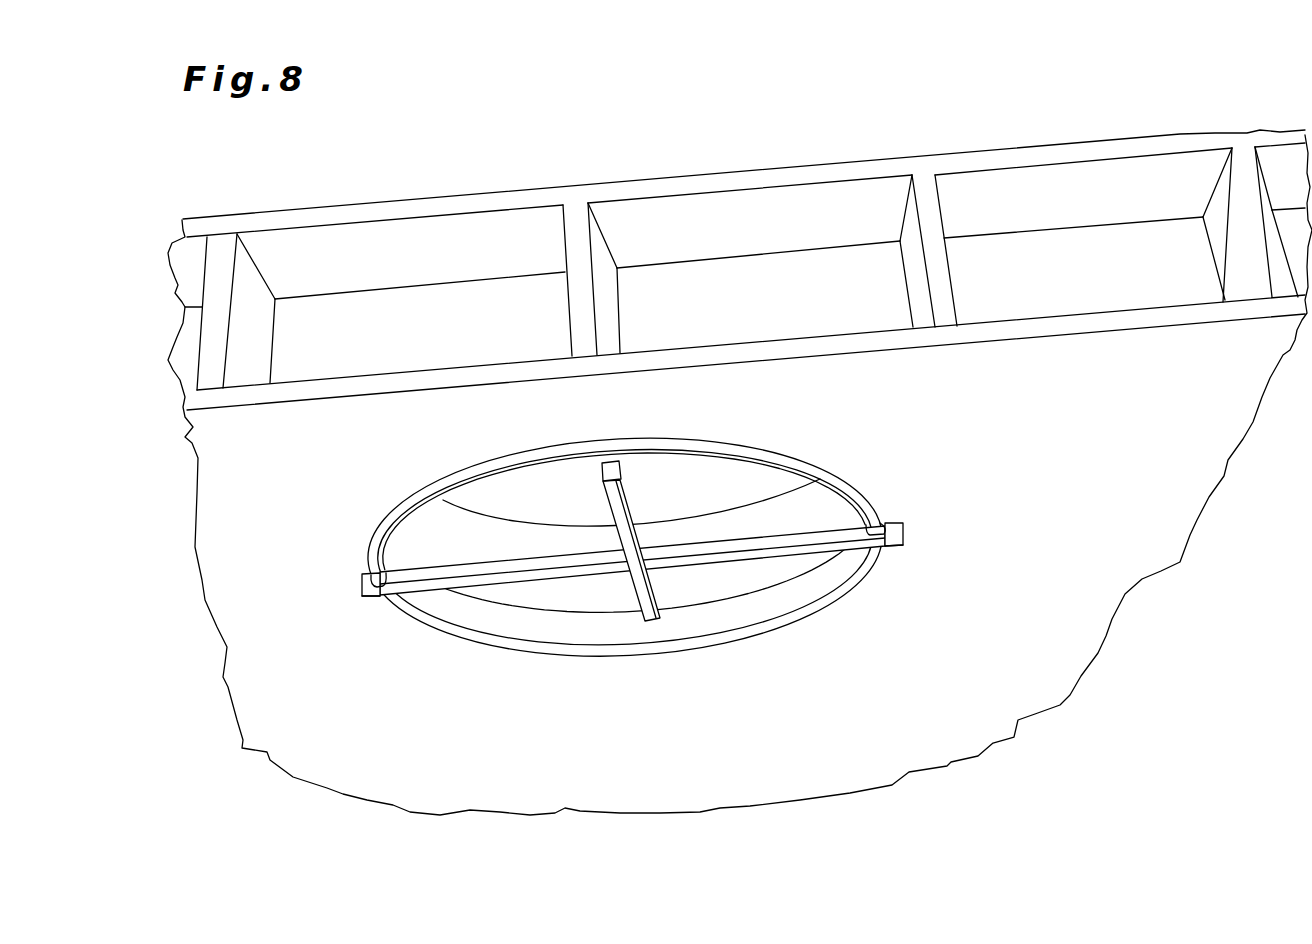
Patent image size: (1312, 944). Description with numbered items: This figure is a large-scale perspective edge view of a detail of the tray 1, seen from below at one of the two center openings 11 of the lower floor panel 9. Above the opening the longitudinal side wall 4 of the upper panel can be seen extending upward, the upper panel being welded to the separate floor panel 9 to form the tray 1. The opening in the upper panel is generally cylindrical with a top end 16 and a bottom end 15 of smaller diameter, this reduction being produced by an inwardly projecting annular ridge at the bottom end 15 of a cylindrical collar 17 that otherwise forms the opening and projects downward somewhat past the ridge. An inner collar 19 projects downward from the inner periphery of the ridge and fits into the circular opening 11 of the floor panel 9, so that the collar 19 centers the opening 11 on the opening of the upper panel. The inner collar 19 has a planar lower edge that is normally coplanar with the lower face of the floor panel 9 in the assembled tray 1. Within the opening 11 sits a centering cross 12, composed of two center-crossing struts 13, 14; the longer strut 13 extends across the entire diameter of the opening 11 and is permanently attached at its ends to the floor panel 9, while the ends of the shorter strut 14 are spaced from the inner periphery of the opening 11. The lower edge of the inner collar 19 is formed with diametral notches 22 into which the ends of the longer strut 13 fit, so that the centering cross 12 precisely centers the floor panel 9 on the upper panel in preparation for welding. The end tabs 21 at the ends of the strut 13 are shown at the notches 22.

The tray 1 is at (636, 133).
The longitudinal side wall 4 is at (765, 180).
The floor panel 9 is at (313, 638).
The opening 11 is at (836, 598).
The centering cross 12 is at (630, 572).
The strut 13 is at (711, 553).
The strut 14 is at (650, 632).
The bottom end 15 is at (475, 632).
The top end 16 is at (726, 502).
The cylindrical collar 17 is at (537, 592).
The inner collar 19 is at (773, 598).
The end tab 21 is at (370, 575).
The diametral notch 22 is at (391, 597).